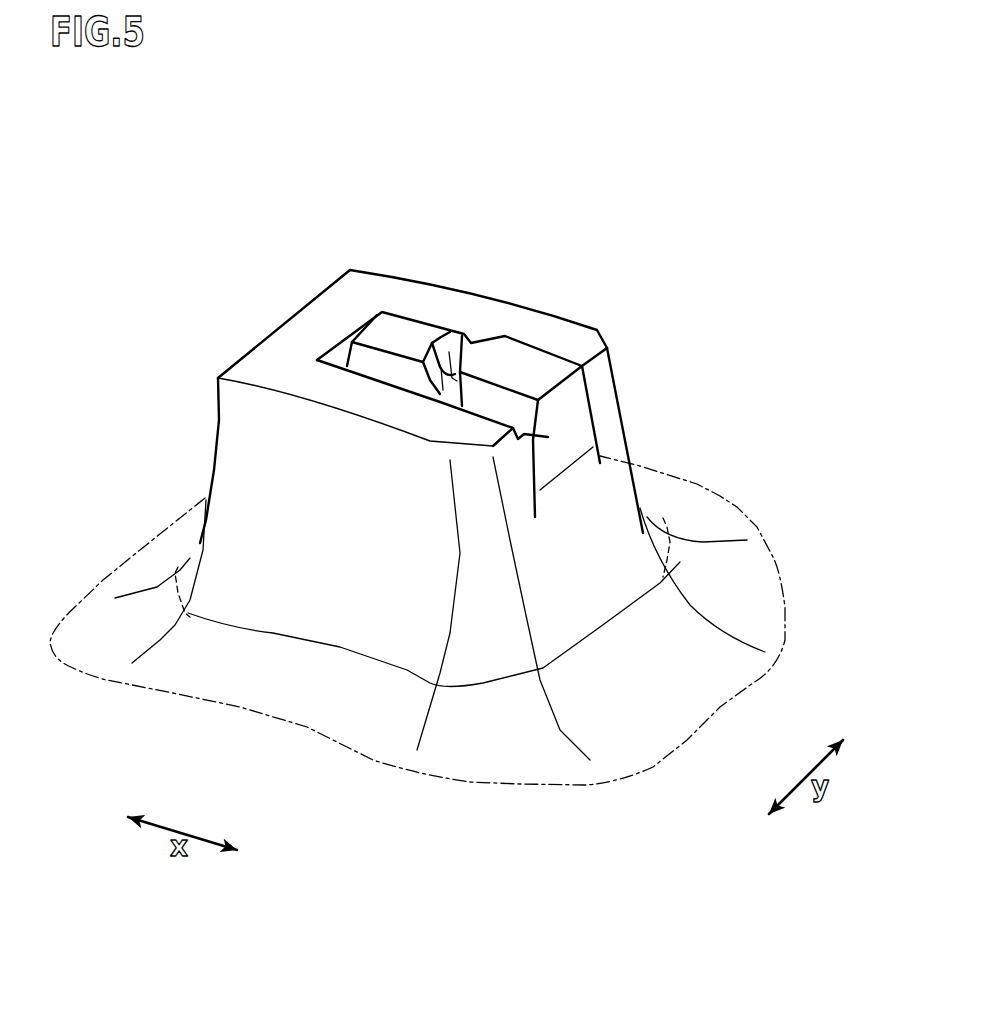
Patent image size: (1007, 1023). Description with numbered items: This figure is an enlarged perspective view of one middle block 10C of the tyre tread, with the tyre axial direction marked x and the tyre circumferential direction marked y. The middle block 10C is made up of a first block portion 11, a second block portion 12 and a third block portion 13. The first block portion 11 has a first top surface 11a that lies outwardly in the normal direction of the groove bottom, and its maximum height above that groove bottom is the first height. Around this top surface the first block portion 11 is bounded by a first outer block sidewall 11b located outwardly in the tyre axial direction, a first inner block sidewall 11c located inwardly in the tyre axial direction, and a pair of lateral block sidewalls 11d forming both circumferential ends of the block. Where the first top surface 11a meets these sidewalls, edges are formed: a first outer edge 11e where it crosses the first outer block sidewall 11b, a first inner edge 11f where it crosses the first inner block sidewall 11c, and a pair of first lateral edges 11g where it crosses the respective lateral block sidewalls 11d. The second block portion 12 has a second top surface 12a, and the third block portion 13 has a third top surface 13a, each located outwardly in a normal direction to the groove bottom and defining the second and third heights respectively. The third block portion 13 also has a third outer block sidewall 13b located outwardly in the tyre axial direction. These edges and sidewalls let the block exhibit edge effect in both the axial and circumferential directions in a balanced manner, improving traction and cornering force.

The middle block 10C is at (692, 315).
The first block portion 11 is at (257, 547).
The first top surface 11a is at (329, 318).
The first outer block sidewall 11b is at (514, 486).
The first inner block sidewall 11c is at (216, 430).
The lateral block sidewalls 11d is at (257, 471).
The first outer edge 11e is at (498, 437).
The first inner edge 11f is at (286, 318).
The first lateral edges 11g is at (296, 394).
The second block portion 12 is at (374, 335).
The second top surface 12a is at (409, 338).
The third block portion 13 is at (510, 402).
The third top surface 13a is at (528, 370).
The third outer block sidewall 13b is at (566, 414).